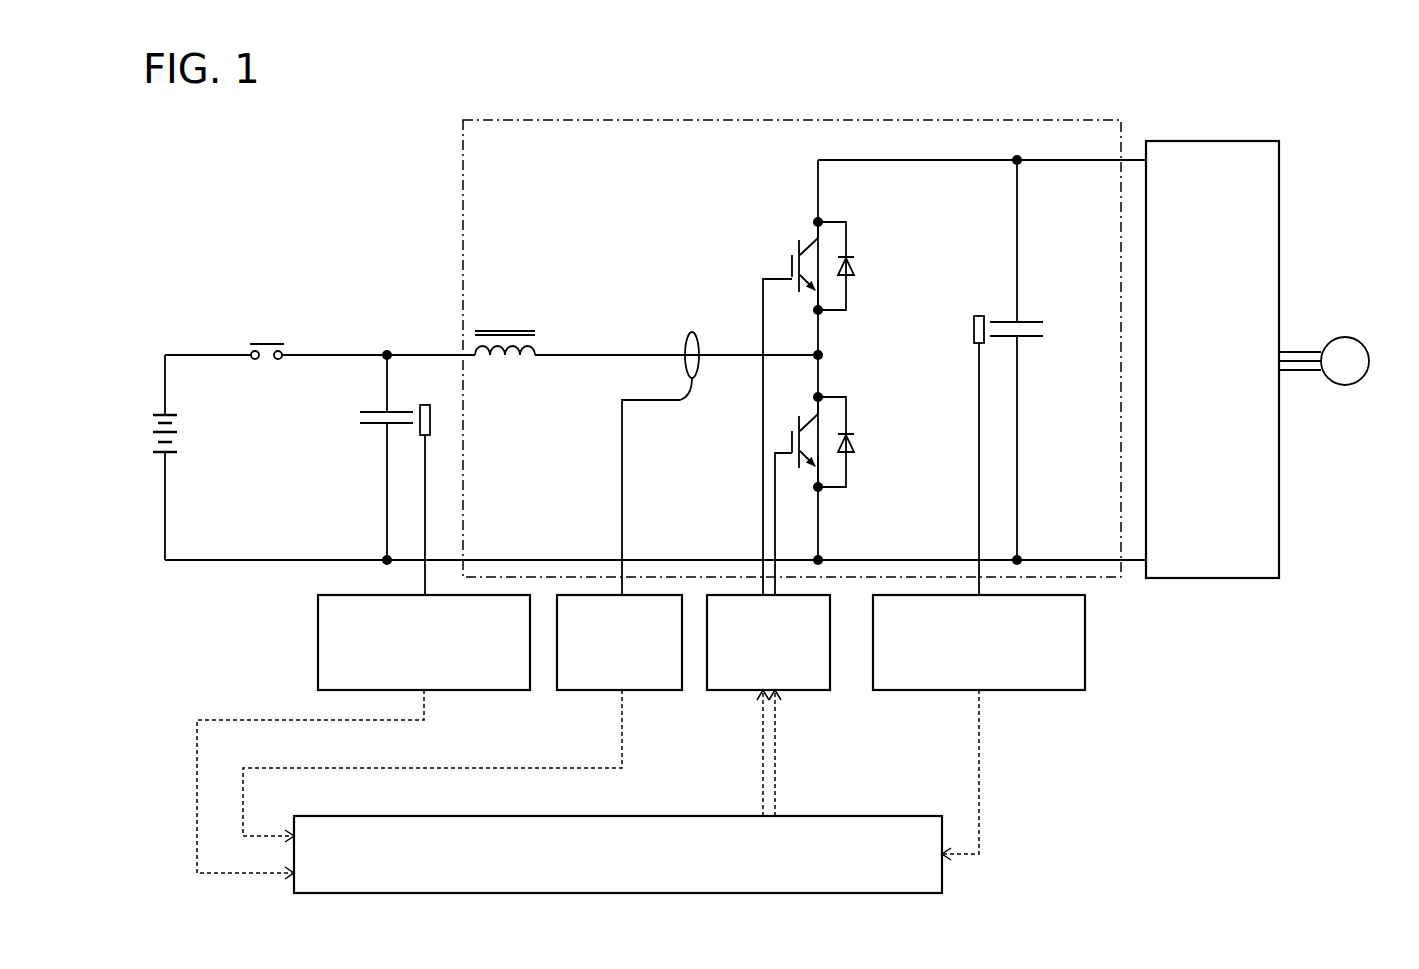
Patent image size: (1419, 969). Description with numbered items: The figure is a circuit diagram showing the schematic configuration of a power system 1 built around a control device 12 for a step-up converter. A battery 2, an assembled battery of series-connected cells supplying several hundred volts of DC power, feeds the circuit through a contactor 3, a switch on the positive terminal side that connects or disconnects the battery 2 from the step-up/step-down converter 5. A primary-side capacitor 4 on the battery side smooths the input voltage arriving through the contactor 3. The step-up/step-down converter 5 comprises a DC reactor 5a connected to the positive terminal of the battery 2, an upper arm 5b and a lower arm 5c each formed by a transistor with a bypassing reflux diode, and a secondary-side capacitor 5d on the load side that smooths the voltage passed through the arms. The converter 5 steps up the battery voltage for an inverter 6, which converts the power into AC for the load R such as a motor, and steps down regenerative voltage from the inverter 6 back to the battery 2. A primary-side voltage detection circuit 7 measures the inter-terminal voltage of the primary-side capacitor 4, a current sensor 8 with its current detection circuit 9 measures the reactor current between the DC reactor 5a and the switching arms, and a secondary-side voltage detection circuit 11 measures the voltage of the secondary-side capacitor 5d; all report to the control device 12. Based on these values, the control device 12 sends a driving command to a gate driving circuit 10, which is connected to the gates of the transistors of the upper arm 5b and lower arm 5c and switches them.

The power system 1 is at (1345, 108).
The battery 2 is at (177, 443).
The contactor 3 is at (278, 322).
The primary-side capacitor 4 is at (380, 430).
The step-up/step-down converter 5 is at (808, 120).
The DC reactor 5a is at (510, 330).
The upper arm 5b is at (788, 268).
The lower arm 5c is at (788, 448).
The secondary-side capacitor 5d is at (1003, 321).
The inverter 6 is at (1186, 140).
The primary-side voltage detection circuit 7 is at (468, 692).
The current sensor 8 is at (690, 333).
The current detection circuit 9 is at (645, 692).
The gate driving circuit 10 is at (810, 692).
The secondary-side voltage detection circuit 11 is at (1025, 692).
The control device 12 is at (896, 815).